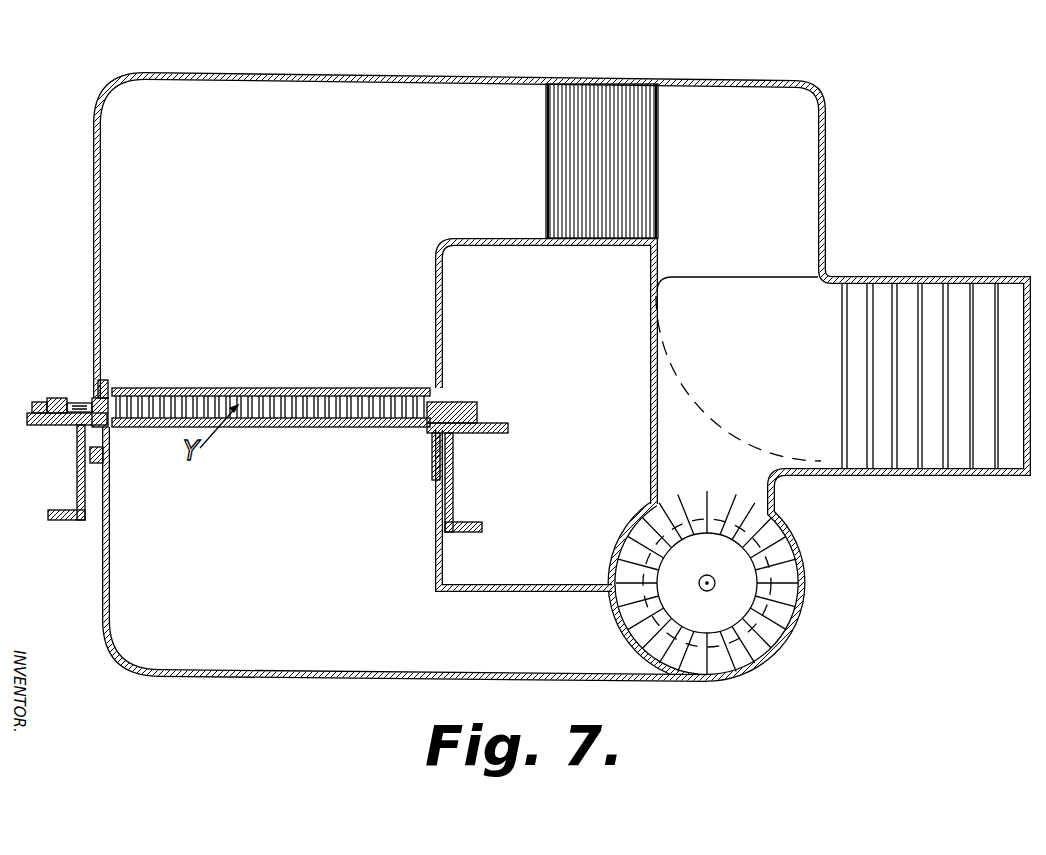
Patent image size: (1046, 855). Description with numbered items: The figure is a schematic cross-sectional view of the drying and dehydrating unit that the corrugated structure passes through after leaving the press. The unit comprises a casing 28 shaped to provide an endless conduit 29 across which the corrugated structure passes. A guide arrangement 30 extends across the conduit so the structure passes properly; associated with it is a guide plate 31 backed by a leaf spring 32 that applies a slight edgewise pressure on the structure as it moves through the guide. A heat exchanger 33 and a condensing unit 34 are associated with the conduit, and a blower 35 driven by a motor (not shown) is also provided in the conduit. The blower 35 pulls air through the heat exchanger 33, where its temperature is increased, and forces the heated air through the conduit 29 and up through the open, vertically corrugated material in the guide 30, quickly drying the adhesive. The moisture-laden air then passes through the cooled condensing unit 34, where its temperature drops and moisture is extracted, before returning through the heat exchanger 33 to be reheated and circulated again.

The casing 28 is at (101, 131).
The endless conduit 29 is at (313, 120).
The guide arrangement 30 is at (304, 392).
The guide plate 31 is at (108, 393).
The leaf spring 32 is at (74, 400).
The heat exchanger 33 is at (925, 305).
The condensing unit 34 is at (637, 147).
The blower 35 is at (806, 598).